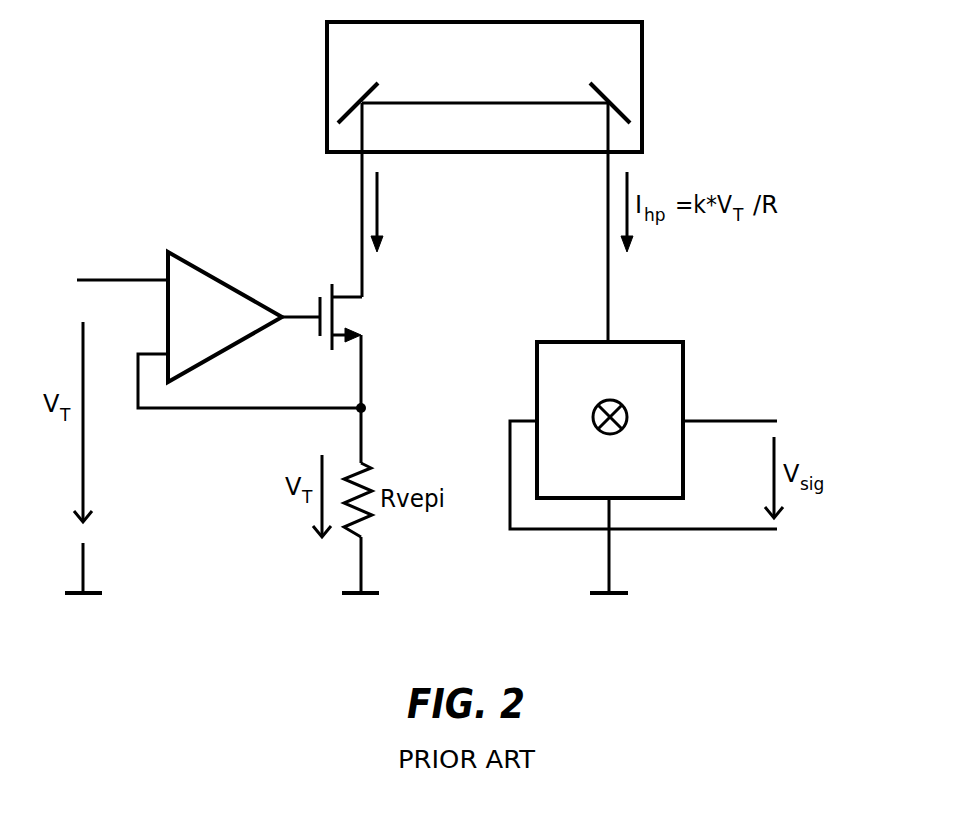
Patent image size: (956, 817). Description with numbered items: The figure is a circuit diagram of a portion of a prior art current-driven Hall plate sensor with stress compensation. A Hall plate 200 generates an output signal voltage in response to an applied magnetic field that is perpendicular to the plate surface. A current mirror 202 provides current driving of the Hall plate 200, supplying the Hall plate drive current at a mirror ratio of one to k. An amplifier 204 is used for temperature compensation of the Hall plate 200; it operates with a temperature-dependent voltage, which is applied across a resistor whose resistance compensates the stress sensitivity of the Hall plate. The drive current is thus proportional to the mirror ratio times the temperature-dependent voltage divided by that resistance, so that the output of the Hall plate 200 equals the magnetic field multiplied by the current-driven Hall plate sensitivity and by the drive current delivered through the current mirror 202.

The Hall plate 200 is at (632, 482).
The current mirror 202 is at (595, 59).
The amplifier 204 is at (218, 277).